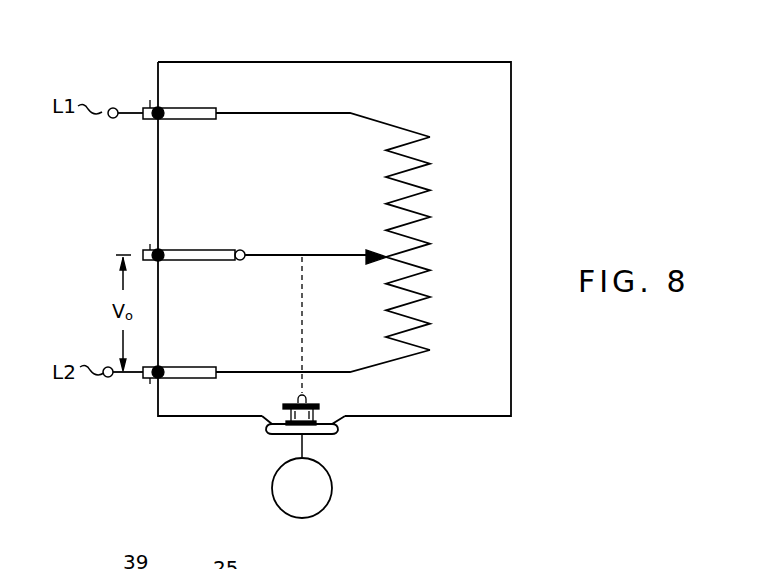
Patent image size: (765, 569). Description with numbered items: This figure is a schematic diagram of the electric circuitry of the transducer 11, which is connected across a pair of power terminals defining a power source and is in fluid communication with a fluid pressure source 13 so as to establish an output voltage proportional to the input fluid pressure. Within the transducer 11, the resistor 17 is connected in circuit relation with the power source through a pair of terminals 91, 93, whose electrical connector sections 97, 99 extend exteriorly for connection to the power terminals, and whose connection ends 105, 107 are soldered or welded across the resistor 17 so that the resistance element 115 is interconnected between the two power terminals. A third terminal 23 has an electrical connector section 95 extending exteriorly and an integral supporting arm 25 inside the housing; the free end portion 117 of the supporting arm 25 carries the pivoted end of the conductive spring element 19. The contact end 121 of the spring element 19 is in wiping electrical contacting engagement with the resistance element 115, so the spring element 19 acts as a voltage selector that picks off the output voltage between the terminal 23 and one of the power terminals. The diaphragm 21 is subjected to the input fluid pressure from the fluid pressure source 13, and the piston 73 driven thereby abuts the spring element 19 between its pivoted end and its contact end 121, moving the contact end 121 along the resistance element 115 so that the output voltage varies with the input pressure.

The transducer 11 is at (520, 58).
The fluid pressure source 13 is at (313, 499).
The resistor 17 is at (402, 243).
The spring element 19 is at (332, 254).
The diaphragm 21 is at (334, 434).
The terminal 23 is at (160, 250).
The supporting arm 25 is at (190, 260).
The piston 73 is at (320, 408).
The terminal 91 is at (162, 108).
The terminal 93 is at (160, 368).
The electrical connector section 95 is at (150, 244).
The electrical connector section 97 is at (150, 100).
The electrical connector section 99 is at (150, 384).
The connection end 105 is at (186, 119).
The connection end 107 is at (193, 378).
The resistance element 115 is at (415, 175).
The free end portion 117 is at (240, 250).
The contact end 121 is at (370, 264).